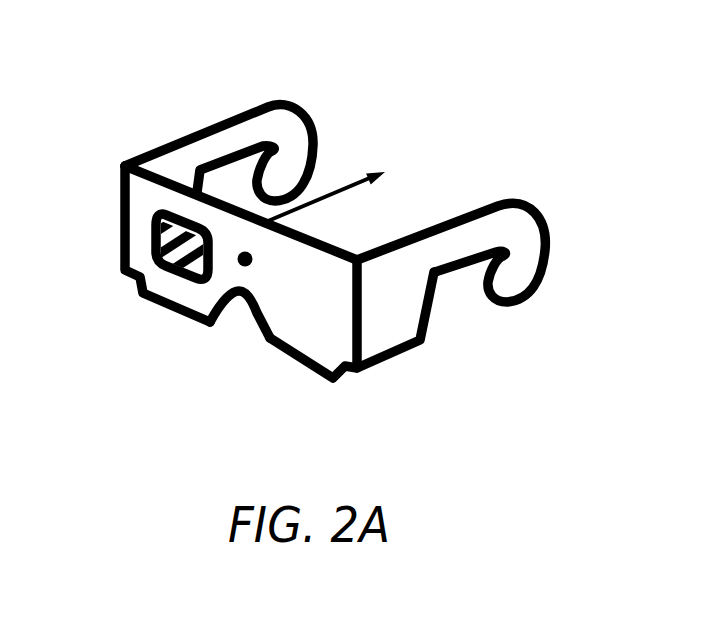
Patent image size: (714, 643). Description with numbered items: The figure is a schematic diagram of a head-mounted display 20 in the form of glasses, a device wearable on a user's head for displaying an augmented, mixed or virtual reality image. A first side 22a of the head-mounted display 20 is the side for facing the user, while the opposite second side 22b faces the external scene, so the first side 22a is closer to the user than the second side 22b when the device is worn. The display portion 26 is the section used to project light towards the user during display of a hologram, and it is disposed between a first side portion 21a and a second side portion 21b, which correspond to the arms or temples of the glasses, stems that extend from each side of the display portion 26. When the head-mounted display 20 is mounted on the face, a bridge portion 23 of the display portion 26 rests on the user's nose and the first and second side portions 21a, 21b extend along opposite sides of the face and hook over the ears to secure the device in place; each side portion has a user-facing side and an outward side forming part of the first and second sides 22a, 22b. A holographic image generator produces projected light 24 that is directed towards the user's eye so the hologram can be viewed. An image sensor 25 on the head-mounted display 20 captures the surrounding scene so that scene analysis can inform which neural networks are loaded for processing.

The head-mounted display 20 is at (125, 110).
The first side portion 21a is at (175, 169).
The second side portion 21b is at (380, 285).
The first side 22a is at (333, 138).
The second side 22b is at (257, 385).
The bridge portion 23 is at (238, 300).
The projected light 24 is at (318, 203).
The image sensor 25 is at (239, 265).
The display portion 26 is at (170, 245).